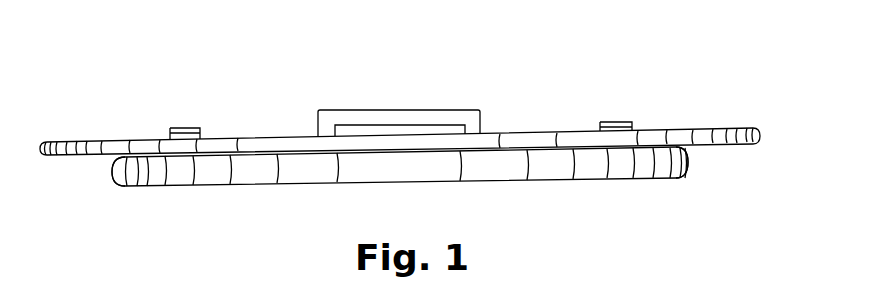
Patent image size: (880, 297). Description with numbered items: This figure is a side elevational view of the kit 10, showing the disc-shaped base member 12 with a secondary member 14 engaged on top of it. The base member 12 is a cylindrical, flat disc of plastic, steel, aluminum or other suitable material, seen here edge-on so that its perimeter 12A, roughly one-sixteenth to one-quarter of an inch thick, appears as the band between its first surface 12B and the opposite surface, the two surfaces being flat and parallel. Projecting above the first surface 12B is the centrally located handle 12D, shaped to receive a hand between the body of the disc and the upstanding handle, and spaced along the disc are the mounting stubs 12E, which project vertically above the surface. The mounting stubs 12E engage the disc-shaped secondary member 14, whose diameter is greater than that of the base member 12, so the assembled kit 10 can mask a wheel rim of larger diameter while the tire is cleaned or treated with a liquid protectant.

The kit 10 is at (565, 97).
The base member 12 is at (597, 187).
The perimeter 12A is at (690, 163).
The first surface 12B is at (332, 183).
The handle 12D is at (467, 110).
The mounting stubs 12E is at (425, 182).
The secondary member 14 is at (722, 129).